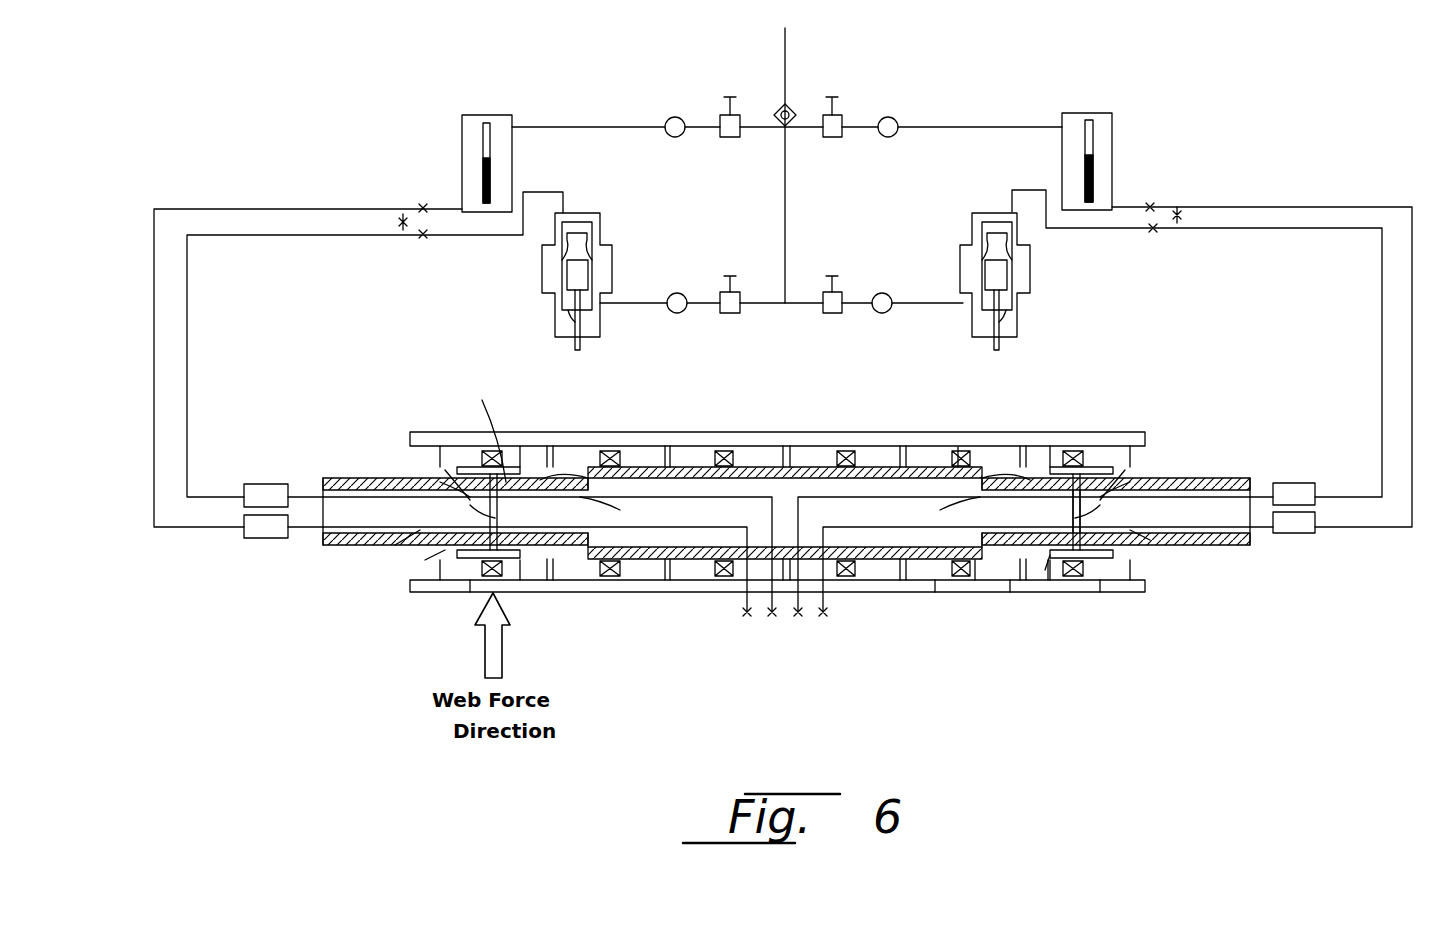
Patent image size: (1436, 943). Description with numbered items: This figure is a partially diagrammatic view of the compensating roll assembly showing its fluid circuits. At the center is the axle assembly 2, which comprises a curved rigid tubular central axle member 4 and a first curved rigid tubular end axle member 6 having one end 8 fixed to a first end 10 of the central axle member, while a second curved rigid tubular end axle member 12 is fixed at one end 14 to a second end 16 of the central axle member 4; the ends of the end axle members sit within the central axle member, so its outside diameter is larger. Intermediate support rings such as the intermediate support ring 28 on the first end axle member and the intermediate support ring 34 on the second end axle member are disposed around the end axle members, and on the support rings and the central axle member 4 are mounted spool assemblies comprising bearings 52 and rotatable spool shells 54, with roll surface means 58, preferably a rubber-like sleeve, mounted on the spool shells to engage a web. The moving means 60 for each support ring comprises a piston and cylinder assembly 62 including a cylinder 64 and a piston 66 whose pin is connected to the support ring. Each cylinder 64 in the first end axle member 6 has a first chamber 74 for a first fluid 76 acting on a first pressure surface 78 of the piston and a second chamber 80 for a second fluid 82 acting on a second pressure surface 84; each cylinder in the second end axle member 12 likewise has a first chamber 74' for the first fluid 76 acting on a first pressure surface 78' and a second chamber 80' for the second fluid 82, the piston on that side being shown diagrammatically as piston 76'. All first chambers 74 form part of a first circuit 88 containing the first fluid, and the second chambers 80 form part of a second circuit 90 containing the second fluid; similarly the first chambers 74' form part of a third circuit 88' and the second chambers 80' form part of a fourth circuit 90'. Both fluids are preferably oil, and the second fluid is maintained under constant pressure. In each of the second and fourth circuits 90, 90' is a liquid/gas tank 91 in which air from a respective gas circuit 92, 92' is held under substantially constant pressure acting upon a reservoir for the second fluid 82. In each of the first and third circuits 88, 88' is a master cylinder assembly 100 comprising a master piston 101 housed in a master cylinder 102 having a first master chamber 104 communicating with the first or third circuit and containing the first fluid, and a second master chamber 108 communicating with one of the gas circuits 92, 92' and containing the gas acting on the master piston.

The axle assembly 2 is at (804, 398).
The central axle member 4 is at (695, 592).
The first end axle member 6 is at (350, 478).
The end of first end axle member 8 is at (600, 527).
The first end of central axle member 10 is at (582, 580).
The second end axle member 12 is at (1230, 480).
The end of second end axle member 14 is at (935, 592).
The second end of central axle member 16 is at (1010, 592).
The intermediate support ring 28 is at (522, 592).
The intermediate support ring 34 is at (1048, 580).
The bearings 52 is at (480, 450).
The spool shells 54 is at (522, 447).
The roll surface means 58 is at (958, 447).
The moving means 60 is at (395, 545).
The piston and cylinder assembly 62 is at (580, 497).
The cylinder 64 is at (445, 481).
The piston 66 is at (470, 505).
The first chamber 74 is at (571, 444).
The first chamber 74' is at (1070, 439).
The first fluid 76 is at (734, 352).
The piston 76' is at (1136, 477).
The first pressure surface 78 is at (416, 454).
The first pressure surface 78' is at (1041, 449).
The second chamber 80 is at (453, 608).
The second chamber 80' is at (1124, 599).
The second fluid 82 is at (485, 180).
The second pressure surface 84 is at (425, 560).
The first circuit 88 is at (375, 349).
The third circuit 88' is at (1197, 347).
The second circuit 90 is at (308, 374).
The fourth circuit 90' is at (1264, 366).
The liquid/gas tank 91 is at (462, 140).
The gas circuit 92 is at (787, 184).
The gas circuit 92' is at (921, 215).
The master cylinder assembly 100 is at (545, 268).
The master piston 101 is at (580, 272).
The master cylinder 102 is at (600, 322).
The first master chamber 104 is at (585, 222).
The second master chamber 108 is at (568, 310).